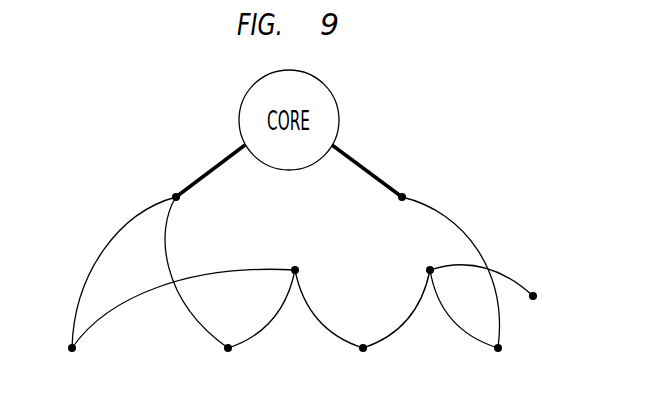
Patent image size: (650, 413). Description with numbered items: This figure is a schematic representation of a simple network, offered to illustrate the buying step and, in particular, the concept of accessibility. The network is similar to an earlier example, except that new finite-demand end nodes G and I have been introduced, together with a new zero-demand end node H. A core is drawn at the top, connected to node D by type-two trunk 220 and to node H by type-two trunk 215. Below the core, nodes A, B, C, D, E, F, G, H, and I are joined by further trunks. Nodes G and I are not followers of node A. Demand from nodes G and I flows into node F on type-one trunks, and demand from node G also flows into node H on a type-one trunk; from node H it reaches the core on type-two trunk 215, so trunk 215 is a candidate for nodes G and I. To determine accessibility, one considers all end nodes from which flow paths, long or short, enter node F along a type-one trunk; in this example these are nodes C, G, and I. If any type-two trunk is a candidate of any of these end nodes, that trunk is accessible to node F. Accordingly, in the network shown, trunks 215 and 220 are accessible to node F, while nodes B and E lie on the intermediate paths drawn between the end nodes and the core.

The type-2 trunk 220 is at (215, 164).
The type-2 trunk 215 is at (366, 164).
The node A is at (72, 363).
The node B is at (229, 363).
The end node C is at (364, 363).
The node D is at (172, 187).
The node E is at (294, 257).
The node F is at (431, 257).
The finite-demand end node G is at (498, 363).
The zero-demand end node H is at (409, 187).
The finite-demand end node I is at (533, 310).